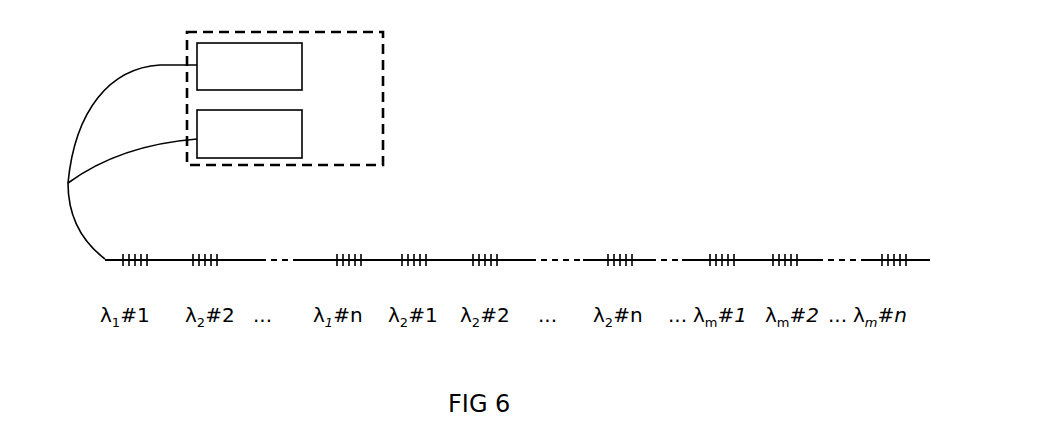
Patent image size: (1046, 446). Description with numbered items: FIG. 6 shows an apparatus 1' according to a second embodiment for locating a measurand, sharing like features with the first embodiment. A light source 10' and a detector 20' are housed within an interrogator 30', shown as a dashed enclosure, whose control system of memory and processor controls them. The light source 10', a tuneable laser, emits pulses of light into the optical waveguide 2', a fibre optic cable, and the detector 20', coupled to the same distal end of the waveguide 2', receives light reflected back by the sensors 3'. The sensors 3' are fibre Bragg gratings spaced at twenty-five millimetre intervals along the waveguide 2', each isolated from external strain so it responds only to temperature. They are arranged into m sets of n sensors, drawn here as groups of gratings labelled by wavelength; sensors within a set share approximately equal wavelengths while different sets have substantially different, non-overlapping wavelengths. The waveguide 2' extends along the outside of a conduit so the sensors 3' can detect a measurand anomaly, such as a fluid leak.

The apparatus 1' is at (517, 196).
The optical waveguide 2' is at (381, 238).
The sensors 3' is at (697, 239).
The light source 10' is at (249, 66).
The detector 20' is at (249, 134).
The interrogator 30' is at (285, 98).